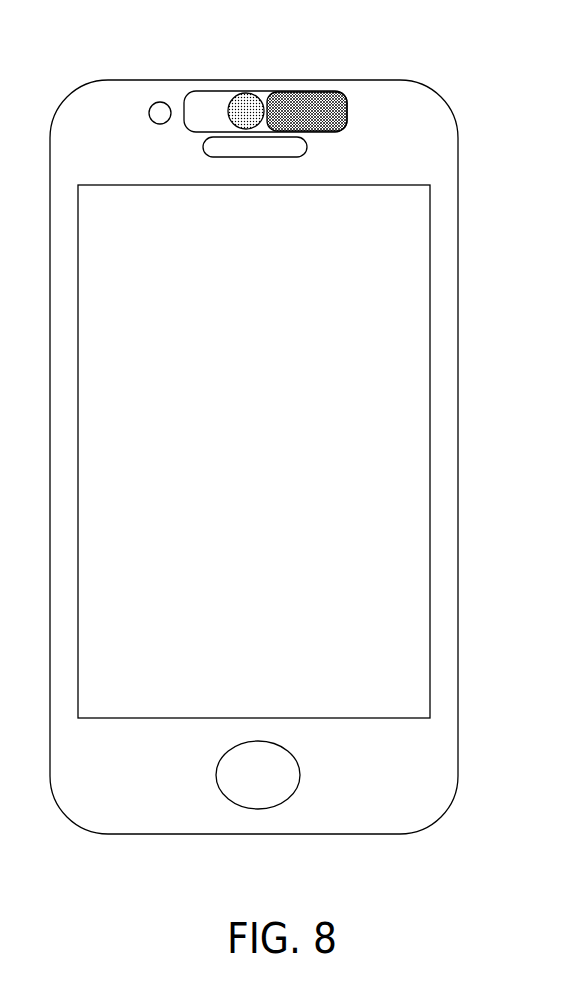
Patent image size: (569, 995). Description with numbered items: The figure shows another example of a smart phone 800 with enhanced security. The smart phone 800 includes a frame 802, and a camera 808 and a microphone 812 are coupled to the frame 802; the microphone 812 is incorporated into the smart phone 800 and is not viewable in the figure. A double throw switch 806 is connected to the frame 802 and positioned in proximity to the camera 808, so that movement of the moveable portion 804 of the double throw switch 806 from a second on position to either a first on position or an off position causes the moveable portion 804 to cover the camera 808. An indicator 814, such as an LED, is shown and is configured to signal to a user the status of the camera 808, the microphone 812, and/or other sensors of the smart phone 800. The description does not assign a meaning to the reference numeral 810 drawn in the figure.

The smart phone 800 is at (458, 157).
The frame 802 is at (425, 106).
The moveable portion 804 is at (303, 98).
The double throw switch 806 is at (347, 110).
The camera 808 is at (233, 97).
The speaker opening 810 is at (255, 147).
The microphone 812 is at (433, 840).
The indicator 814 is at (152, 104).